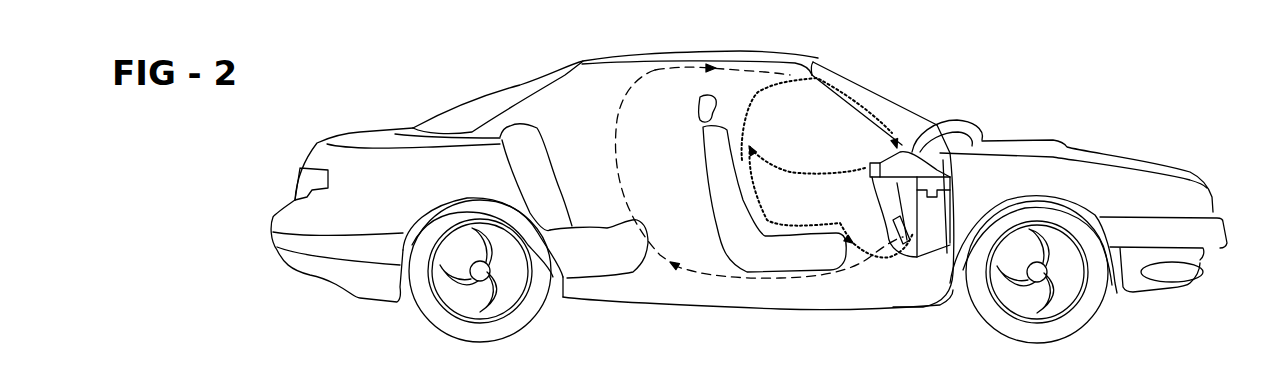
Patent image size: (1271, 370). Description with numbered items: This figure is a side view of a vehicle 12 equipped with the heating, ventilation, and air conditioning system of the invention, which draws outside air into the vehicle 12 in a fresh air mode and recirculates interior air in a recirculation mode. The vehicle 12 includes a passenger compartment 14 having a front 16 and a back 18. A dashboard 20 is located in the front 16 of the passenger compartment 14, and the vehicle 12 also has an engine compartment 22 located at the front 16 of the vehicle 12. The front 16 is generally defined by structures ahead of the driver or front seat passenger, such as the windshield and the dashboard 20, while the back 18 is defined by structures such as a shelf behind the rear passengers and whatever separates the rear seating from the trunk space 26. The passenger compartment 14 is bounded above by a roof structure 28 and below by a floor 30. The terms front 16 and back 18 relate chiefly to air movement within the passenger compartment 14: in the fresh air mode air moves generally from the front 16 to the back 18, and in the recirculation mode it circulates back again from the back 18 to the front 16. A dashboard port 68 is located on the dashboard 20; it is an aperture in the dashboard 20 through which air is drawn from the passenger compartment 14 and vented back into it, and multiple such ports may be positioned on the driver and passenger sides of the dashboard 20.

The vehicle 12 is at (813, 57).
The passenger compartment 14 is at (562, 153).
The front 16 is at (938, 282).
The back 18 is at (570, 292).
The dashboard 20 is at (900, 235).
The engine compartment 22 is at (993, 183).
The trunk space 26 is at (347, 202).
The roof structure 28 is at (583, 61).
The floor 30 is at (683, 307).
The dashboard port 68 is at (940, 130).